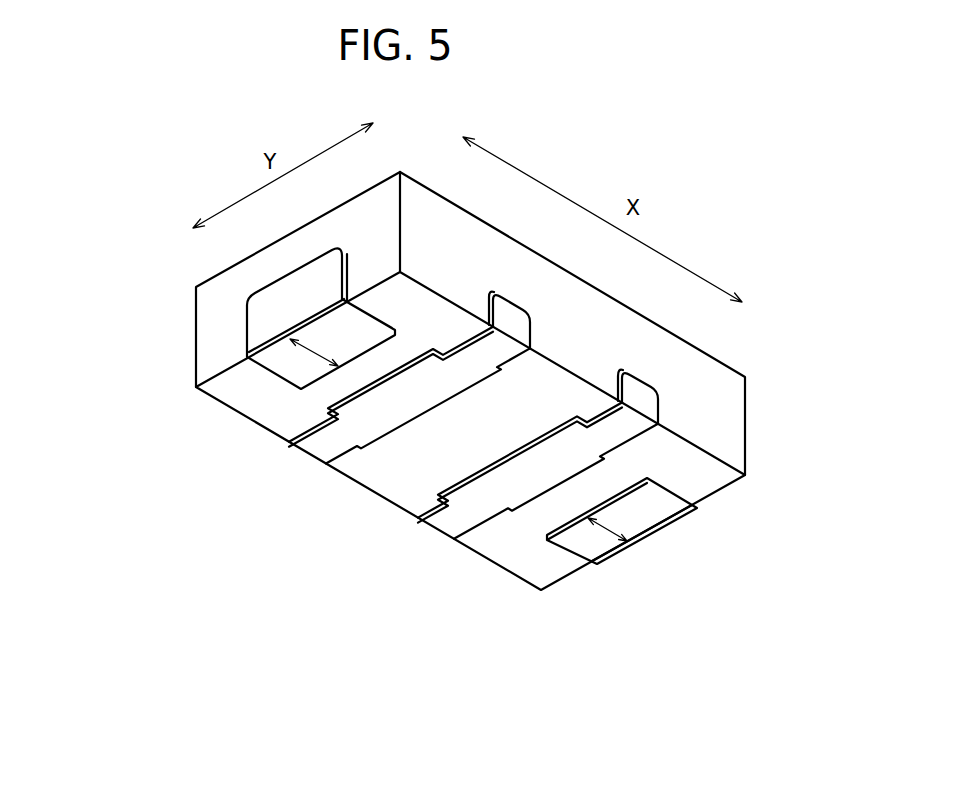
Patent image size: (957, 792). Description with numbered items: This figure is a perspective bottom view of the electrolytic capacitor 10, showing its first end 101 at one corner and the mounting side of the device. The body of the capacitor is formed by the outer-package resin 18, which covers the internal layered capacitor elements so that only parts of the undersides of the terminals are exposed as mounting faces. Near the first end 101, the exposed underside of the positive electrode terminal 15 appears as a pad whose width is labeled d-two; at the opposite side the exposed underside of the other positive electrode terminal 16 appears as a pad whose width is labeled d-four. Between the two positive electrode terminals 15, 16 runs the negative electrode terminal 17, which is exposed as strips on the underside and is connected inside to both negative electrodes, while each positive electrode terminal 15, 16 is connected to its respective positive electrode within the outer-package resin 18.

The electrolytic capacitor 10 is at (187, 354).
The first end 101 is at (377, 208).
The positive electrode terminal 15 is at (265, 306).
The positive electrode terminal 16 is at (607, 548).
The negative electrode terminal 17 is at (435, 527).
The outer-package resin 18 is at (718, 362).